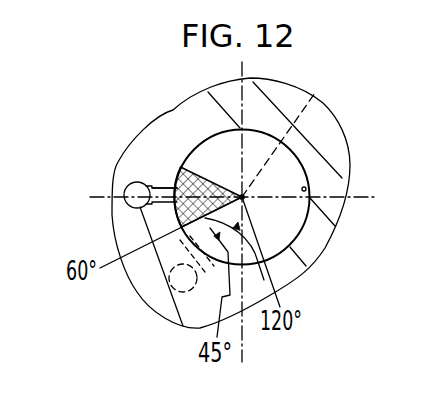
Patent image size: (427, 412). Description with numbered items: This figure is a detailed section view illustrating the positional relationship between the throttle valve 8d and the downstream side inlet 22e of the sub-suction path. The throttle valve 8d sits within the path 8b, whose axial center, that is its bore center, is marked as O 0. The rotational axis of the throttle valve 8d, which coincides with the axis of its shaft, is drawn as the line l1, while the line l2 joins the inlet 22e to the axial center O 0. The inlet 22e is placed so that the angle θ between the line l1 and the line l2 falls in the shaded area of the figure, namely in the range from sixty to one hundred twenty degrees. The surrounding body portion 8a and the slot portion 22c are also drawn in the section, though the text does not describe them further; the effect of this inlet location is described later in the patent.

The rotational axis of the throttle valve l1 is at (244, 342).
The line linking the inlet to the axial center l2 is at (97, 191).
The cam body outer periphery 8a is at (306, 268).
The throttle valve 8d is at (291, 160).
The axial center 0 is at (242, 197).
The path 8b is at (306, 189).
The keyhole slot 22c is at (127, 184).
The downstream side inlet 22e is at (158, 187).